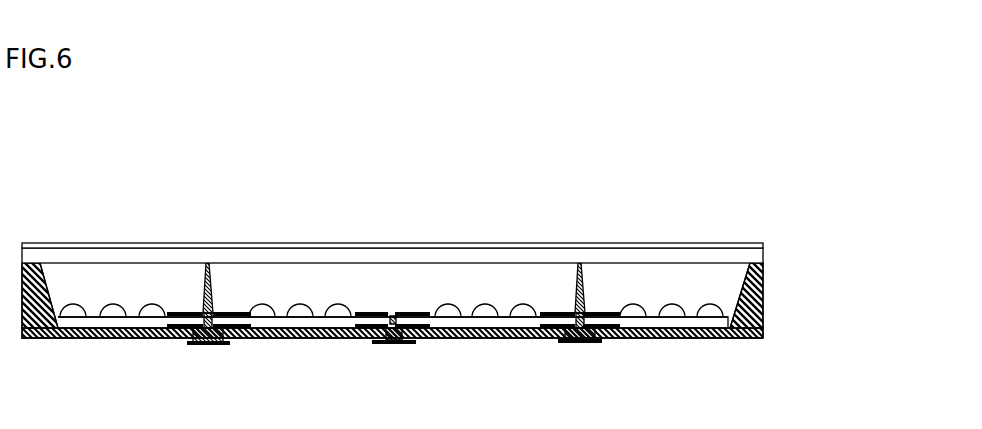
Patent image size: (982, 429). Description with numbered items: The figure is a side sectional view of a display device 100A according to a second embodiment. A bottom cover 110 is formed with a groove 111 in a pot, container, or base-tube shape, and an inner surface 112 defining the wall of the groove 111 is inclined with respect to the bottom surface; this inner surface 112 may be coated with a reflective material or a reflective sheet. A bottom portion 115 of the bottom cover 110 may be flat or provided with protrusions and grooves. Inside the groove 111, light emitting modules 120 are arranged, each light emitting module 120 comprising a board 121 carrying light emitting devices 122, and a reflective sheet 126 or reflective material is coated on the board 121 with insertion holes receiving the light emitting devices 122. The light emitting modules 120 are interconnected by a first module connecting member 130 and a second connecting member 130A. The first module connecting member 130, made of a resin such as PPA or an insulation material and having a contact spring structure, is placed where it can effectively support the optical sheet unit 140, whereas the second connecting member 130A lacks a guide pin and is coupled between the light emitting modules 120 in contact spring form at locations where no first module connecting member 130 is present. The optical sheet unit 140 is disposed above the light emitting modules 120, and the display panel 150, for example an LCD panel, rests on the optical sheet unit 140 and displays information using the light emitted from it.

The display device 100A is at (98, 152).
The bottom cover 110 is at (406, 299).
The groove 111 is at (684, 286).
The inner surface 112 is at (748, 284).
The bottom portion 115 is at (667, 339).
The light emitting module 120 is at (551, 209).
The board 121 is at (500, 312).
The light emitting devices 122 is at (540, 308).
The reflective sheet 126 is at (135, 313).
The first module connecting member 130 is at (212, 281).
The second connecting member 130A is at (399, 301).
The optical sheet unit 140 is at (102, 257).
The display panel 150 is at (48, 245).